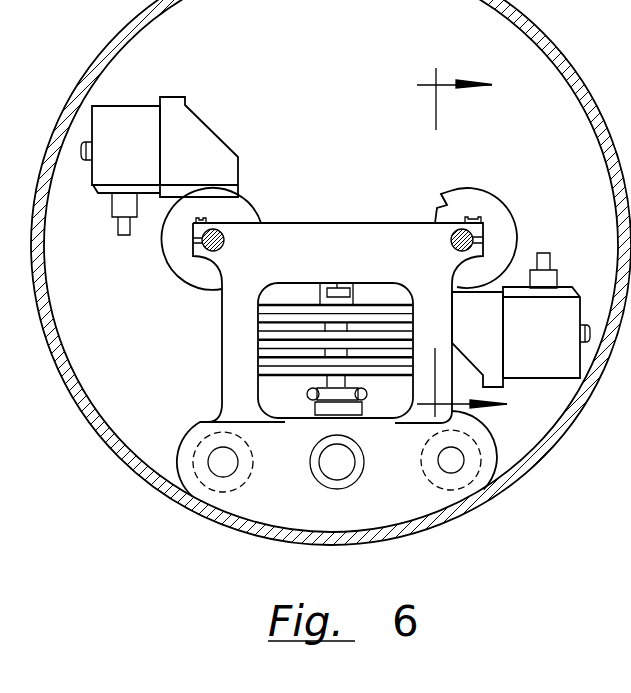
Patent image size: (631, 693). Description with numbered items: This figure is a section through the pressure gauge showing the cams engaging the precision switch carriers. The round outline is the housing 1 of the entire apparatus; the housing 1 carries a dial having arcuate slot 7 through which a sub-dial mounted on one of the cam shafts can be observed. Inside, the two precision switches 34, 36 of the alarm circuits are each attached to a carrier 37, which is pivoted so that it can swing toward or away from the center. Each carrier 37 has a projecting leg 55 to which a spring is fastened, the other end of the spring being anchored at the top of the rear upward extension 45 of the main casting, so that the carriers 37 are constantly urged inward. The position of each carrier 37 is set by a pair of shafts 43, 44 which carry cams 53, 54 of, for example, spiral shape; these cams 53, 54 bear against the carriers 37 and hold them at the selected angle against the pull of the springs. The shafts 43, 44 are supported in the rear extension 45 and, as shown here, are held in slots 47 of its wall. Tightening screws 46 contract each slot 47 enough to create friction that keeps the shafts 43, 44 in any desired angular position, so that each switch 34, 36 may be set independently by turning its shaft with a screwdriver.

The housing 1 is at (547, 447).
The arcuate slot 7 is at (472, 243).
The precision switch 34 is at (522, 351).
The precision switch 36 is at (107, 166).
The carrier 37 is at (497, 287).
The shaft 43 is at (446, 210).
The shaft 44 is at (224, 240).
The rear upward extension 45 is at (316, 268).
The tightening screw 46 is at (466, 216).
The slot 47 is at (483, 243).
The cam 53 is at (178, 265).
The cam 54 is at (490, 210).
The projecting leg 55 is at (173, 166).